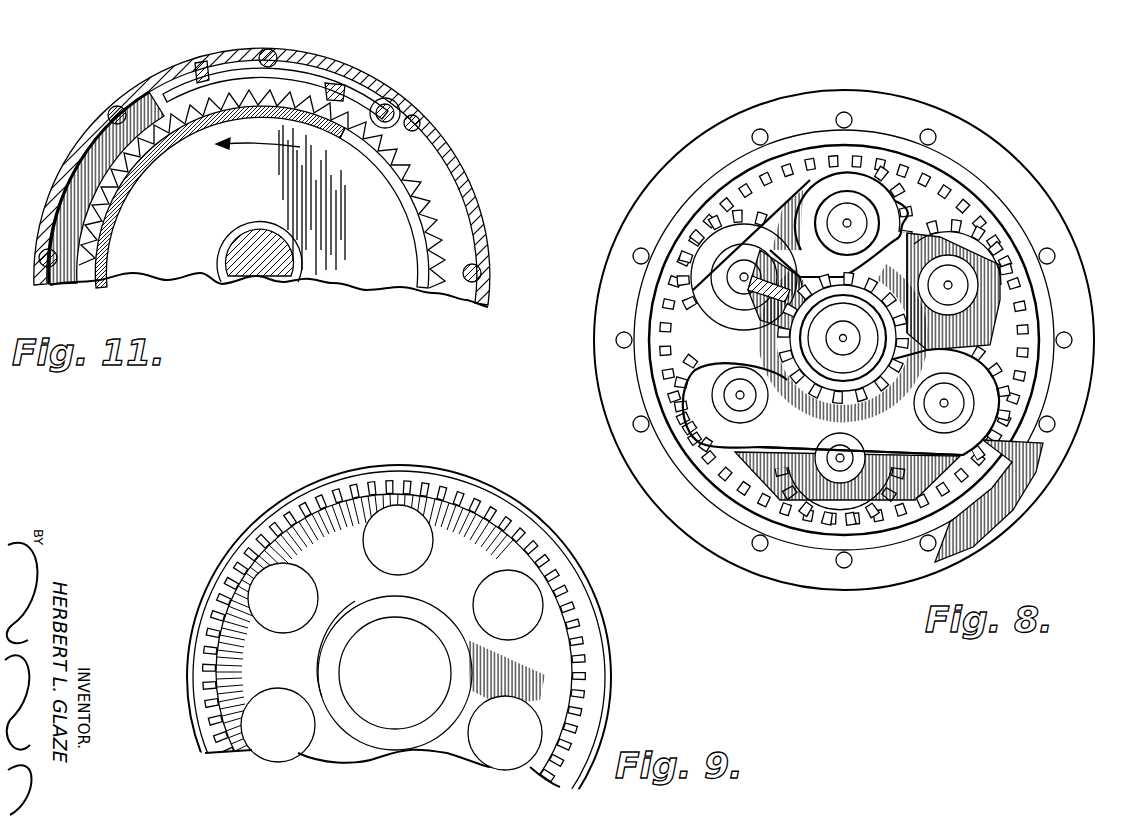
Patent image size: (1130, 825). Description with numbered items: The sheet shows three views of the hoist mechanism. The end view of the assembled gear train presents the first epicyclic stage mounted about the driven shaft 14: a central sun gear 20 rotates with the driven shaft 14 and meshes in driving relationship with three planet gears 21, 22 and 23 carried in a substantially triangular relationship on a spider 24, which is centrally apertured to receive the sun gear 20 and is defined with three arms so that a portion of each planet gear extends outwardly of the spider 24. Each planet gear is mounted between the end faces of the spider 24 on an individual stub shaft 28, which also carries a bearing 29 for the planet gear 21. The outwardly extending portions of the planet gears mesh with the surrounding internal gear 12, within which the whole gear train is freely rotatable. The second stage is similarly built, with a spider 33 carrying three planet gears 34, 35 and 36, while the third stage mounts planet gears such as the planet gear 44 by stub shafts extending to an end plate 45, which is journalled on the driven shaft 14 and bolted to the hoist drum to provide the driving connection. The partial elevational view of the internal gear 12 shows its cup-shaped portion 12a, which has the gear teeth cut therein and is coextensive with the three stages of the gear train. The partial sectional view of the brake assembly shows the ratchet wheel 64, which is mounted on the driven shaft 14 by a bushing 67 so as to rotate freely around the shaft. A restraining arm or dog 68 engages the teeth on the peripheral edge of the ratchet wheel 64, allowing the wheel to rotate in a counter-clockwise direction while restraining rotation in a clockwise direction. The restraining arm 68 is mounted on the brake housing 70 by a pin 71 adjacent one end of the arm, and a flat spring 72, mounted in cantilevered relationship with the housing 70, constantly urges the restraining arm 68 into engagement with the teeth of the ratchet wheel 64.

In FIG. 9, the internal gear 12 is at (352, 585).
In FIG. 9, the cup-shaped portion 12a is at (403, 470).
In FIG. 11, the driven shaft 14 is at (250, 284).
In FIG. 8, the sun gear 20 is at (775, 322).
In FIG. 8, the planet gear 21 is at (852, 160).
In FIG. 8, the planet gear 22 is at (1003, 437).
In FIG. 8, the planet gear 23 is at (861, 437).
In FIG. 8, the spider 24 is at (836, 438).
In FIG. 8, the stub shaft 28 is at (918, 207).
In FIG. 8, the bearing 29 is at (865, 205).
In FIG. 8, the spider 33 is at (697, 273).
In FIG. 8, the planet gear 34 is at (982, 243).
In FIG. 8, the planet gear 35 is at (840, 507).
In FIG. 8, the planet gear 36 is at (700, 250).
In FIG. 8, the planet gear 44 is at (700, 437).
In FIG. 8, the end plate 45 is at (1058, 233).
In FIG. 11, the ratchet wheel 64 is at (183, 193).
In FIG. 11, the bushing 67 is at (305, 282).
In FIG. 11, the restraining arm 68 is at (370, 73).
In FIG. 11, the housing 70 is at (148, 70).
In FIG. 11, the pin 71 is at (403, 97).
In FIG. 11, the flat spring 72 is at (297, 52).